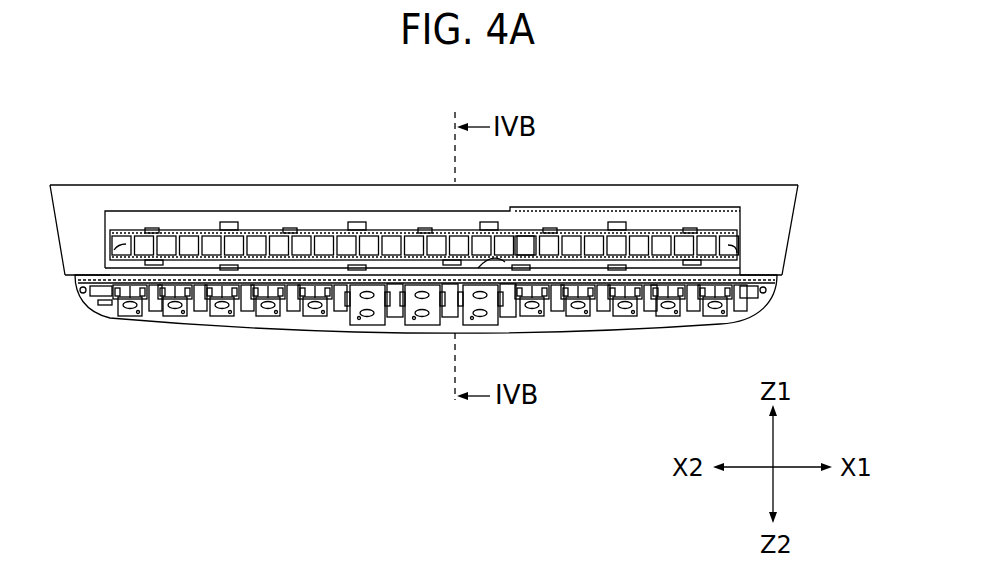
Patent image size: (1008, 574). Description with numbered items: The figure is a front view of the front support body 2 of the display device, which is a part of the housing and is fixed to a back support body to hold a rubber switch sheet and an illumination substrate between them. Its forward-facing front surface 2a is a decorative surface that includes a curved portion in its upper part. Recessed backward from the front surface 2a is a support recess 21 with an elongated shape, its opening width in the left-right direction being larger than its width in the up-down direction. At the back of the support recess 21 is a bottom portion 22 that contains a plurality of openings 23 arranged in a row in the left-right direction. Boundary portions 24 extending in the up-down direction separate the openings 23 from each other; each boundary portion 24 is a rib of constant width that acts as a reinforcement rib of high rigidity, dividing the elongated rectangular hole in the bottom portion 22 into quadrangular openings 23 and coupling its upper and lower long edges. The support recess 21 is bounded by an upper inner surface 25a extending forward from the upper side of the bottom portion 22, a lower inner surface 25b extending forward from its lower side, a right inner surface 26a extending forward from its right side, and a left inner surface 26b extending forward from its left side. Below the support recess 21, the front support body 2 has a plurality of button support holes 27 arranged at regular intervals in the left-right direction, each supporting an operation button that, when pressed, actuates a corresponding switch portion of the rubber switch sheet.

The front support body 2 is at (293, 168).
The front surface 2a is at (74, 228).
The support recess 21 is at (740, 242).
The bottom portion 22 is at (183, 236).
The openings 23 is at (410, 247).
The boundary portions 24 is at (258, 238).
The upper inner surface 25a is at (522, 237).
The lower inner surface 25b is at (478, 268).
The right inner surface 26a is at (737, 253).
The left inner surface 26b is at (125, 256).
The button support holes 27 is at (222, 308).